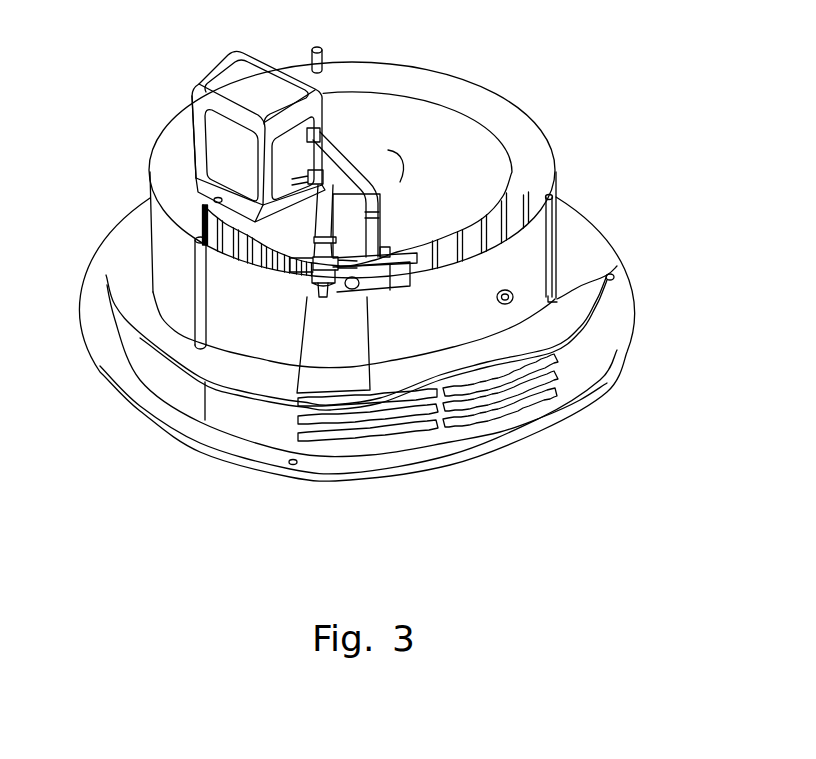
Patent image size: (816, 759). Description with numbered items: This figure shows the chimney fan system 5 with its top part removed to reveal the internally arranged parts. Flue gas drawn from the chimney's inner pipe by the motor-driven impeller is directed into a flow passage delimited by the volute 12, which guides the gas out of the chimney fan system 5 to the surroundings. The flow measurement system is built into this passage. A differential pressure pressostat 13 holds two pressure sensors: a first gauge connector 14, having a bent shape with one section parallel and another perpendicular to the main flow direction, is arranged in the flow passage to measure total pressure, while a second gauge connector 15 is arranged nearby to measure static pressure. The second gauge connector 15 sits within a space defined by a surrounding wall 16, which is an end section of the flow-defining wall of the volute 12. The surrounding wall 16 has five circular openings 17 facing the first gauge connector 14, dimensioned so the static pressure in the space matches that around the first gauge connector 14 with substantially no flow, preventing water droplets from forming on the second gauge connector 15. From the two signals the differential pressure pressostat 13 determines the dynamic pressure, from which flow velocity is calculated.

The chimney fan system 5 is at (577, 86).
The volute 12 is at (515, 136).
The differential pressure pressostat 13 is at (200, 133).
The first gauge connector 14 is at (307, 293).
The second gauge connector 15 is at (355, 222).
The surrounding wall 16 is at (363, 282).
The circular openings 17 is at (333, 287).